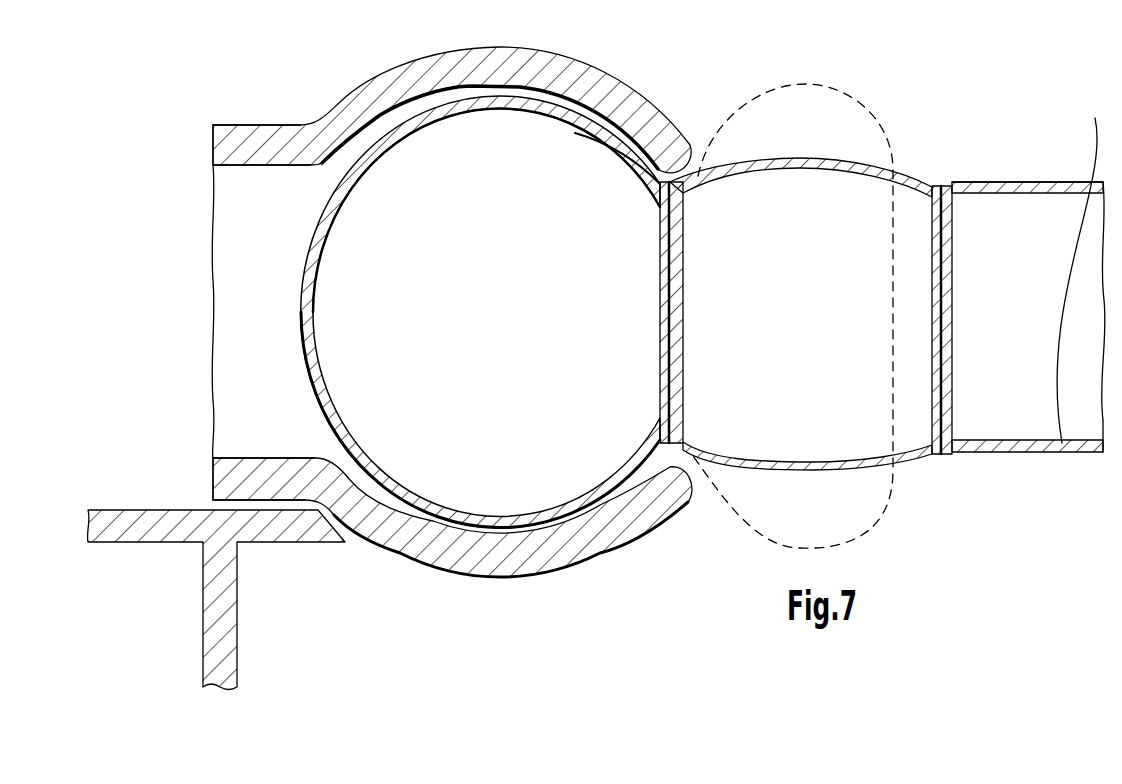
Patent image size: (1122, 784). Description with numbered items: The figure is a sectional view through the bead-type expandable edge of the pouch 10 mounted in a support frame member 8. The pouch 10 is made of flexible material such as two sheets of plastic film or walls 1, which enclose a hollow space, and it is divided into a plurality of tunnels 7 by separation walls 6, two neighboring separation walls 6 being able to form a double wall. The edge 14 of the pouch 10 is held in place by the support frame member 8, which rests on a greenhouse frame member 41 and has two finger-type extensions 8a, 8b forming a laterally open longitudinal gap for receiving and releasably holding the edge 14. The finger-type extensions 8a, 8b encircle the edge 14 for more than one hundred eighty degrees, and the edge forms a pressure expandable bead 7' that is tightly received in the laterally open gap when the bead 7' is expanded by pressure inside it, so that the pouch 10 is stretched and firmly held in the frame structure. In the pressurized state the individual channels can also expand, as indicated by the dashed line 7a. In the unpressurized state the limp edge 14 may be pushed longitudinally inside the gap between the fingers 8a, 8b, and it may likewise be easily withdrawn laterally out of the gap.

The walls 1 is at (1053, 190).
The separation walls 6 is at (661, 256).
The tunnels 7 is at (840, 288).
The pressure expandable bead 7' is at (632, 124).
The dashed line 7a is at (889, 498).
The support frame member 8 is at (265, 140).
The finger-type extension 8a is at (497, 55).
The finger-type extension 8b is at (567, 550).
The pouch 10 is at (1008, 142).
The fourth edge 14 is at (312, 295).
The greenhouse frame member 41 is at (263, 538).